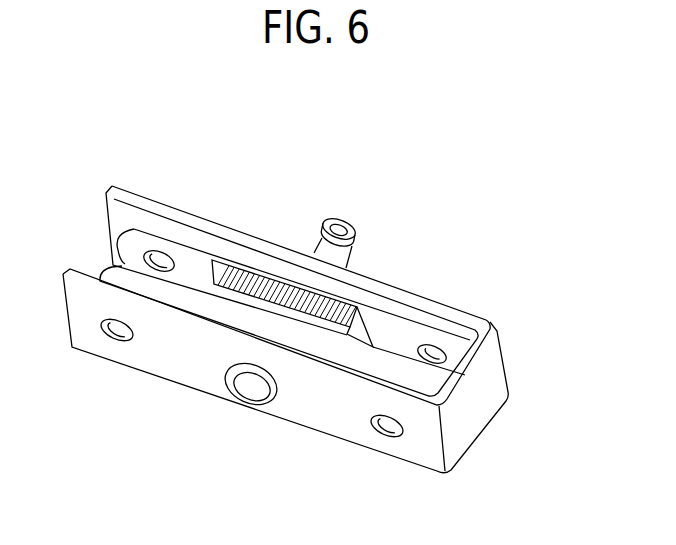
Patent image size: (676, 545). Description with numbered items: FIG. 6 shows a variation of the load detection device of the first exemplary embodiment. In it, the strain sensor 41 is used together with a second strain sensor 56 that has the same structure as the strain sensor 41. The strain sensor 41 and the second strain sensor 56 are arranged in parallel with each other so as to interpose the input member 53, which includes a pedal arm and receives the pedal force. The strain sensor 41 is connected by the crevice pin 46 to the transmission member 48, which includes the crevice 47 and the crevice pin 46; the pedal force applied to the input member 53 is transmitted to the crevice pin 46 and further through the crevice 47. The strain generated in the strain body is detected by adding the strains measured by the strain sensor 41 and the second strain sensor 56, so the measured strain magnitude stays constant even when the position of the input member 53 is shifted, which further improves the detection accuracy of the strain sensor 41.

The strain sensor 41 is at (190, 257).
The crevice pin 46 is at (345, 253).
The crevice 47 is at (447, 311).
The transmission member 48 is at (535, 212).
The input member 53 is at (267, 280).
The second strain sensor 56 is at (160, 293).